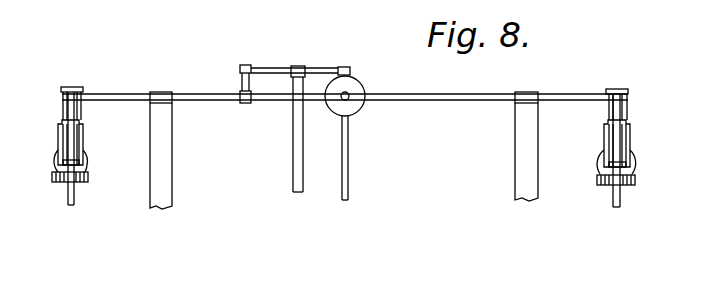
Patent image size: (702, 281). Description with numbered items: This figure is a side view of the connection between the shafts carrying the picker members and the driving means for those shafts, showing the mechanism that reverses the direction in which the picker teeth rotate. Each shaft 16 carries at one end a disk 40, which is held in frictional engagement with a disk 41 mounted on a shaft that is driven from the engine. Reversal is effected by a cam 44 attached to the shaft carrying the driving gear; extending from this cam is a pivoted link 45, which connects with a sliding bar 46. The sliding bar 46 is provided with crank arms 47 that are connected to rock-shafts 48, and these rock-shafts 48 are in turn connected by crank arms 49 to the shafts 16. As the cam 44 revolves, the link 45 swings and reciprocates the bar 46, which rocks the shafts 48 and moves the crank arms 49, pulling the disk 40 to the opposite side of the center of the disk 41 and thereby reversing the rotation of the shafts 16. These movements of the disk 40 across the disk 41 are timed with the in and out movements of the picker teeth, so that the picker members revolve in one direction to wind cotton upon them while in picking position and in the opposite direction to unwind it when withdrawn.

The shaft 16 is at (75, 197).
The disk 40 is at (90, 178).
The disk 41 is at (87, 157).
The crank arm 49 is at (84, 137).
The cam 44 is at (351, 88).
The pivoted link 45 is at (316, 68).
The sliding bar 46 is at (247, 65).
The crank arm 47 is at (240, 78).
The rock-shaft 48 is at (432, 94).